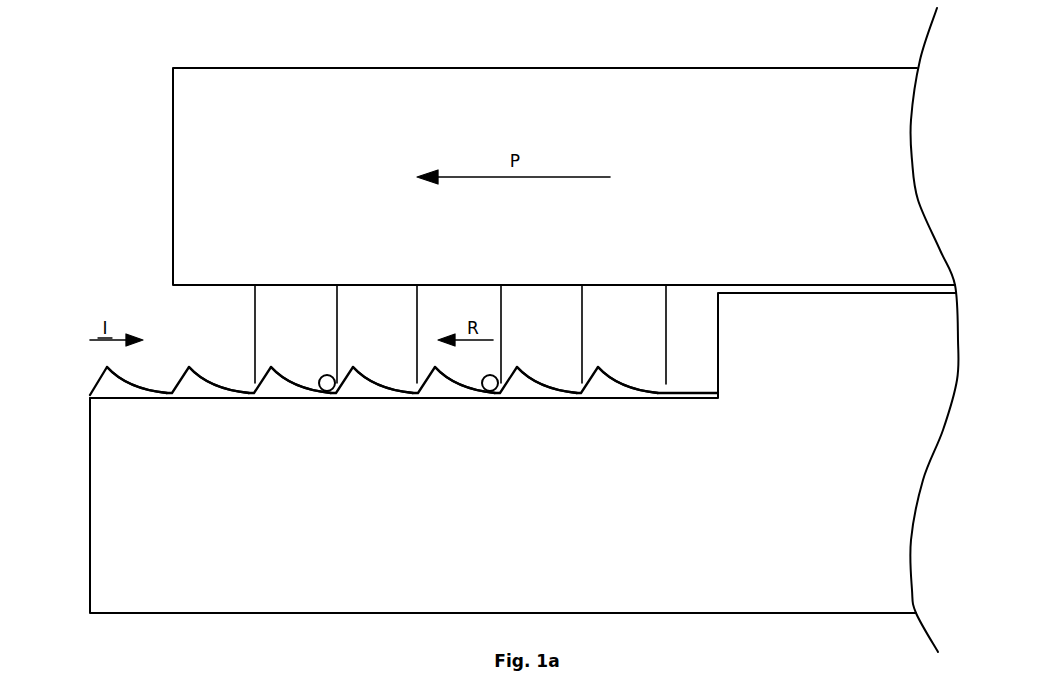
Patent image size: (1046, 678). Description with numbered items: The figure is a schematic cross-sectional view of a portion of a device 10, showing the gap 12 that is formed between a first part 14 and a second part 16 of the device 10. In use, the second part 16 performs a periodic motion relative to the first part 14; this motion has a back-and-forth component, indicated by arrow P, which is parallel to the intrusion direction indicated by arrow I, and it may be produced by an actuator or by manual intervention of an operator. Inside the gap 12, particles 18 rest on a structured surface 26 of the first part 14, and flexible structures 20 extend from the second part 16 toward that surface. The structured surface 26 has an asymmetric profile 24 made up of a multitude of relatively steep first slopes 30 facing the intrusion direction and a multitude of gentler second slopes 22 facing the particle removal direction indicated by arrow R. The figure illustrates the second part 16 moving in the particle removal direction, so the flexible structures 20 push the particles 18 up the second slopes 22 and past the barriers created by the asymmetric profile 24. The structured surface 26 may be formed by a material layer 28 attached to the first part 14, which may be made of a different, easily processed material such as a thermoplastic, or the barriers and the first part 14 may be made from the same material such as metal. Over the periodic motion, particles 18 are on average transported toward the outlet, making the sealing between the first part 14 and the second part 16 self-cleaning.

The device 10 is at (727, 27).
The gap 12 is at (285, 340).
The first part 14 is at (362, 613).
The second part 16 is at (363, 68).
The particles 18 is at (327, 391).
The flexible structures 20 is at (257, 305).
The second slopes 22 is at (158, 393).
The asymmetric profile 24 is at (218, 318).
The structured surface 26 is at (696, 338).
The material layer 28 is at (690, 398).
The first slopes 30 is at (98, 378).